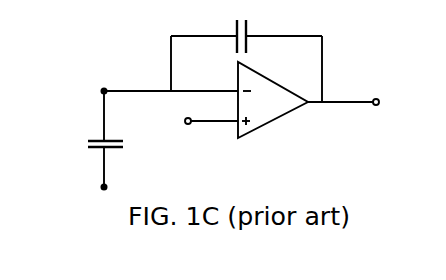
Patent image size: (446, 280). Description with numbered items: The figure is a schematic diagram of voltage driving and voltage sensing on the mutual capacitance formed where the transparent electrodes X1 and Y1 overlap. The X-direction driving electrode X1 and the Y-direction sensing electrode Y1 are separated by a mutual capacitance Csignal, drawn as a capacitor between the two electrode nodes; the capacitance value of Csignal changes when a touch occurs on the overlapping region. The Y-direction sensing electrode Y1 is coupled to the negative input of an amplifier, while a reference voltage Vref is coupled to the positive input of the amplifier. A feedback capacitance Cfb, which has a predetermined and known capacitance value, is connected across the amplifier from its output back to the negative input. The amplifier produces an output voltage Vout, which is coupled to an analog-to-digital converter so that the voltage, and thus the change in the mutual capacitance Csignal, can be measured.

The feedback capacitance Cfb is at (227, 33).
The mutual capacitance Csignal is at (85, 139).
The reference voltage Vref is at (201, 129).
The output voltage Vout is at (350, 92).
The Y-direction sensing electrode Y1 is at (161, 84).
The X-direction driving electrode X1 is at (96, 198).